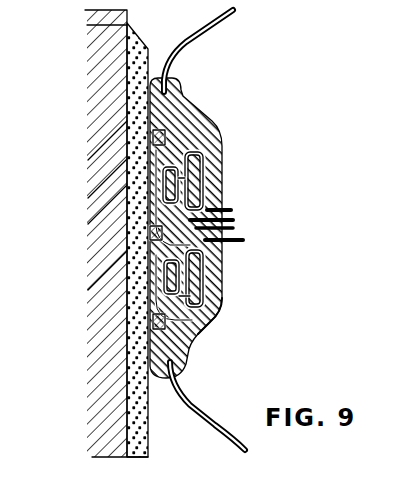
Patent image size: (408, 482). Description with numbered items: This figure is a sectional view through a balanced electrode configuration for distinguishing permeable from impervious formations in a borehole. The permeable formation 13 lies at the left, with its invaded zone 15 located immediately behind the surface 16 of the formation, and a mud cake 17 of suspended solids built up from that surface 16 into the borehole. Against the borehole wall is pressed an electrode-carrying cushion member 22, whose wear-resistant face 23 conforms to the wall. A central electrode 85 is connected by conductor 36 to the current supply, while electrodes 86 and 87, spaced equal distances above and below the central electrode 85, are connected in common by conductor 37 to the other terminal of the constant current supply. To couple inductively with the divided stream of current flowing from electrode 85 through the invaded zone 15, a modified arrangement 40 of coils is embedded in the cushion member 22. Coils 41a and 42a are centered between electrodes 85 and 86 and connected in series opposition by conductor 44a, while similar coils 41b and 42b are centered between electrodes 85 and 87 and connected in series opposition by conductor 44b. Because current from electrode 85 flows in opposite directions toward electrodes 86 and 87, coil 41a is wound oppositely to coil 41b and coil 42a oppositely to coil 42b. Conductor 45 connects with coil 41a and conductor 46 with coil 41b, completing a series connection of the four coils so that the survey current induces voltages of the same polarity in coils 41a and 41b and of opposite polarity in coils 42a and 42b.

The permeable formation 13 is at (95, 45).
The mud cake 17 is at (138, 82).
The wear-resistant face 23 is at (128, 159).
The invaded zone 15 is at (108, 191).
The surface of the formation 16 is at (127, 211).
The cushion member 22 is at (213, 129).
The central electrode 85 is at (151, 235).
The electrode 86 is at (152, 140).
The electrode 87 is at (152, 321).
The coil 41a is at (217, 176).
The coil 41b is at (222, 281).
The conductor 44a is at (218, 162).
The conductor 44b is at (222, 298).
The conductor 45 is at (234, 210).
The conductor 37 is at (236, 220).
The conductor 36 is at (236, 228).
The conductor 46 is at (240, 241).
The coil 42a is at (176, 148).
The coil 42b is at (200, 337).
The modified arrangement of coils 40 is at (218, 313).